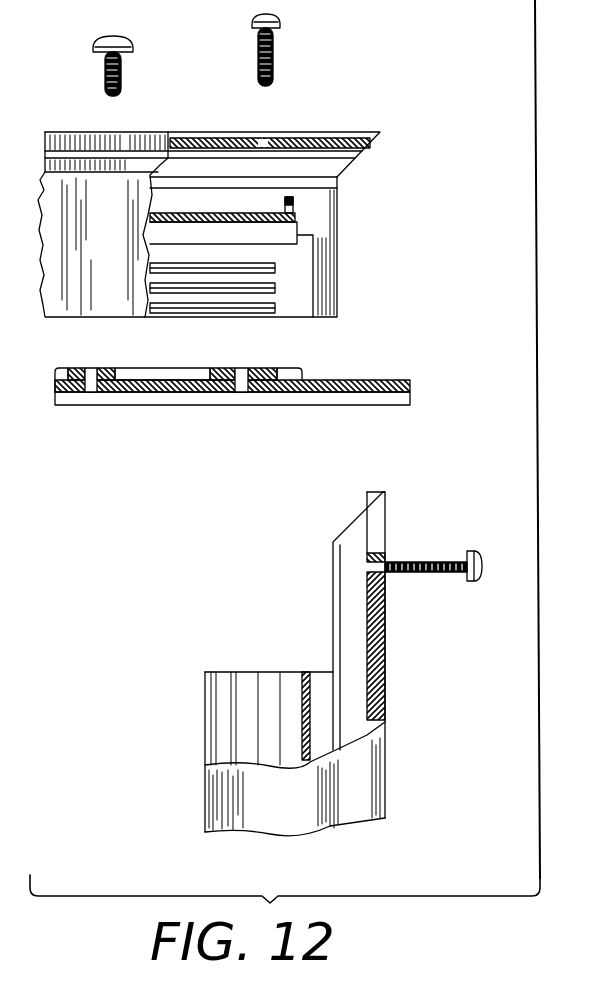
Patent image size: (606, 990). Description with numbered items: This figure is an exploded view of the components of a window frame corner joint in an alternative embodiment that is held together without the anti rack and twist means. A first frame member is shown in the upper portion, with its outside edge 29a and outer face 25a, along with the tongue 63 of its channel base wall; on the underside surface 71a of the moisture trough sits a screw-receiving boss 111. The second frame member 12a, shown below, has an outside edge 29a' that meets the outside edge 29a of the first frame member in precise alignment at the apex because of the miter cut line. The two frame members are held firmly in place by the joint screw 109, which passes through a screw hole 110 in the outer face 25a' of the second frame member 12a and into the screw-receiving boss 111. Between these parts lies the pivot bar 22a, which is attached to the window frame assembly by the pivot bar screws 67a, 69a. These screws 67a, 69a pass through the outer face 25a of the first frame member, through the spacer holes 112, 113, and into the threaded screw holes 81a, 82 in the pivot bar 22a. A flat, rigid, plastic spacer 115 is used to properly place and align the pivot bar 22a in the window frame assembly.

The pivot bar screw 67a is at (122, 34).
The pivot bar screw 69a is at (282, 22).
The outer face 25a is at (270, 128).
The outside edge 29a is at (239, 143).
The underside surface 71a is at (203, 212).
The screw-receiving boss 111 is at (290, 206).
The tongue 63 is at (175, 236).
The spacer hole 113 is at (93, 368).
The spacer 115 is at (160, 368).
The spacer hole 112 is at (243, 368).
The threaded screw hole 82 is at (90, 393).
The threaded screw hole 81a is at (241, 393).
The pivot bar 22a is at (411, 388).
The outside edge 29a' is at (414, 522).
The joint screw 109 is at (435, 562).
The screw hole 110 is at (377, 592).
The outer face 25a' is at (377, 716).
The second frame member 12a is at (385, 790).